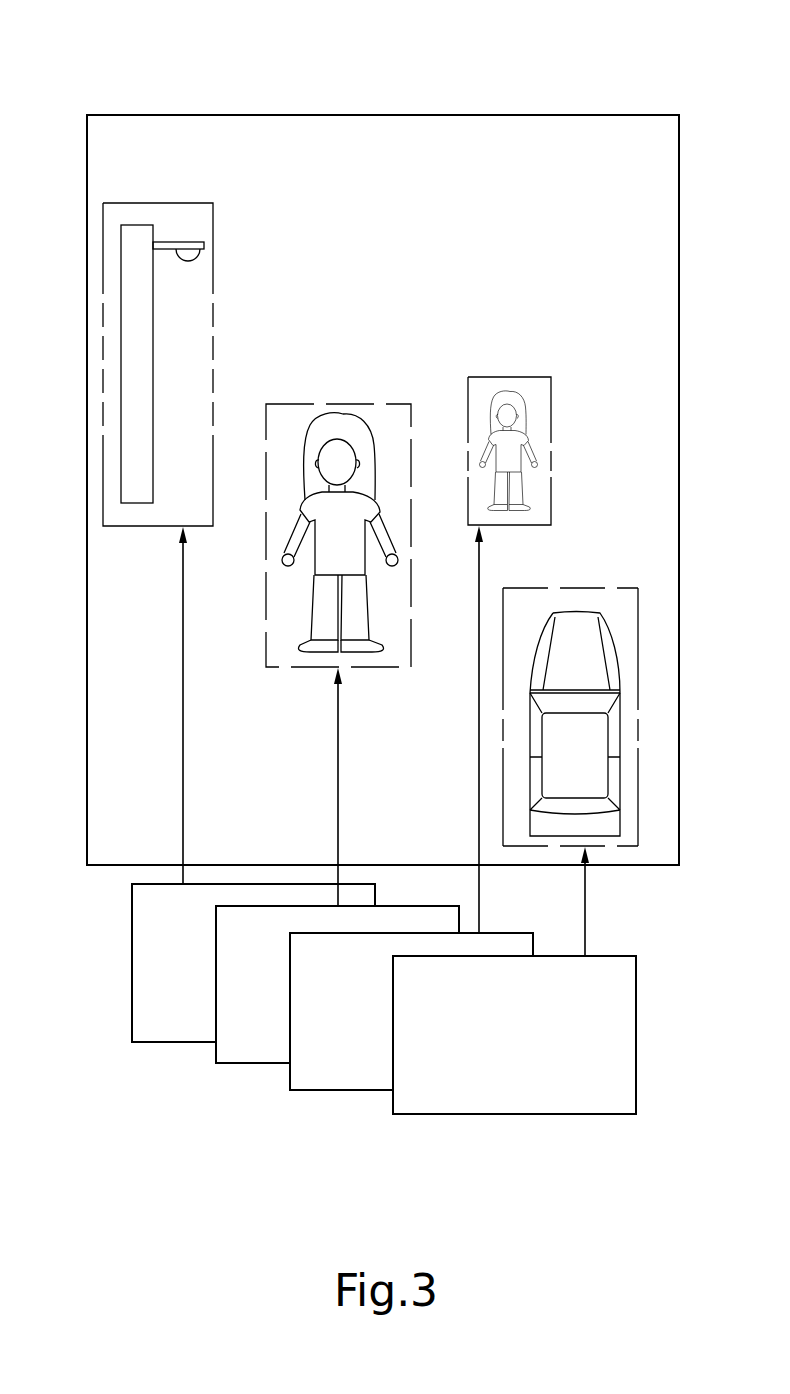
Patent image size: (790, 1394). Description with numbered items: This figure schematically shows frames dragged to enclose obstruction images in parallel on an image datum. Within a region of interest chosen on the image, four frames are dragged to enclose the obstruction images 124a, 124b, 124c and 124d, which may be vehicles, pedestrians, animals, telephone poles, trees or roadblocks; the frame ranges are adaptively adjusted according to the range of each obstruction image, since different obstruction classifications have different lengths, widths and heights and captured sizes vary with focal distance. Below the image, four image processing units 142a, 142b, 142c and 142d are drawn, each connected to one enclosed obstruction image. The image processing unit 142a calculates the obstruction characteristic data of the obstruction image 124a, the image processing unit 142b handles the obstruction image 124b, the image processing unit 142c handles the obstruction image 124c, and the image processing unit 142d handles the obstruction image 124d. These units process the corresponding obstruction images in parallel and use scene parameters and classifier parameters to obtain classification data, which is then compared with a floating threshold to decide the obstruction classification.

The obstruction image 124a is at (158, 200).
The obstruction image 124b is at (337, 403).
The obstruction image 124c is at (518, 375).
The obstruction image 124d is at (593, 587).
The image processing unit 142a is at (173, 1043).
The image processing unit 142b is at (253, 1065).
The image processing unit 142c is at (340, 1092).
The image processing unit 142d is at (513, 1115).